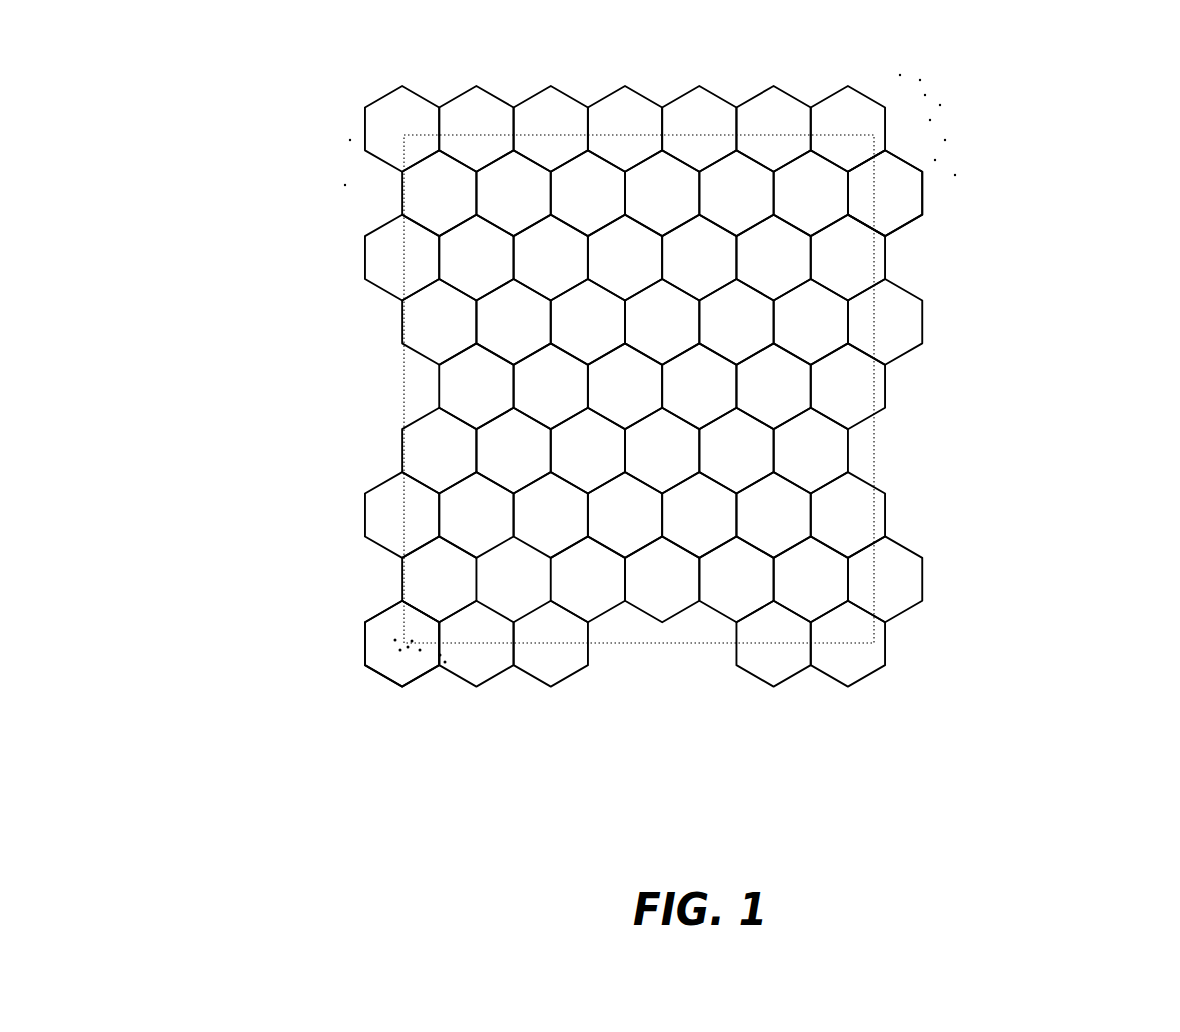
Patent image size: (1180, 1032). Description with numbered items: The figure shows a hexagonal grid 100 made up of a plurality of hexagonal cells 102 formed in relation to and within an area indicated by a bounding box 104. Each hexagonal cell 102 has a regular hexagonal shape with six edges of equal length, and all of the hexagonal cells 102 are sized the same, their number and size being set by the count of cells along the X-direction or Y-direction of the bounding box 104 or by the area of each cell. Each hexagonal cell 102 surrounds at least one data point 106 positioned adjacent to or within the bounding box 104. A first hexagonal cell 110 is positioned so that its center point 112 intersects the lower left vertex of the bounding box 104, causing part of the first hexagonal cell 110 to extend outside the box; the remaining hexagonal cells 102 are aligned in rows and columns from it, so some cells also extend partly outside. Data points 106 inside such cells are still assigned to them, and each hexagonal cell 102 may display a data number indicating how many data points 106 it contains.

The hexagonal grid 100 is at (312, 101).
The hexagonal cell 102 is at (920, 189).
The bounding box 104 is at (877, 459).
The data point 106 is at (962, 136).
The first hexagonal cell 110 is at (380, 673).
The center point 112 is at (402, 642).